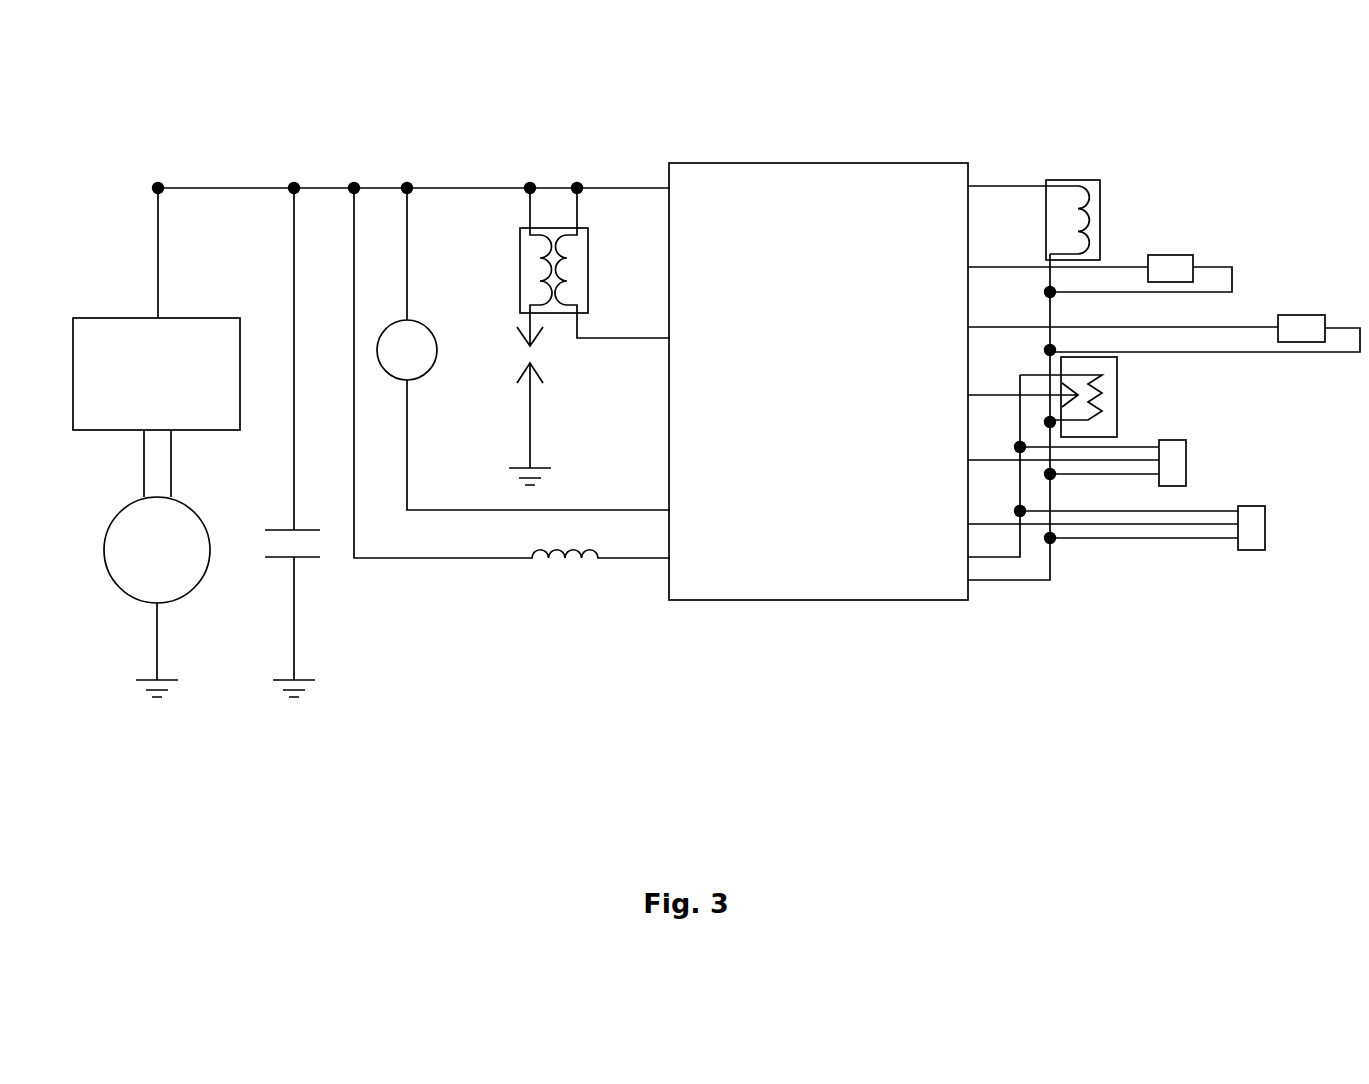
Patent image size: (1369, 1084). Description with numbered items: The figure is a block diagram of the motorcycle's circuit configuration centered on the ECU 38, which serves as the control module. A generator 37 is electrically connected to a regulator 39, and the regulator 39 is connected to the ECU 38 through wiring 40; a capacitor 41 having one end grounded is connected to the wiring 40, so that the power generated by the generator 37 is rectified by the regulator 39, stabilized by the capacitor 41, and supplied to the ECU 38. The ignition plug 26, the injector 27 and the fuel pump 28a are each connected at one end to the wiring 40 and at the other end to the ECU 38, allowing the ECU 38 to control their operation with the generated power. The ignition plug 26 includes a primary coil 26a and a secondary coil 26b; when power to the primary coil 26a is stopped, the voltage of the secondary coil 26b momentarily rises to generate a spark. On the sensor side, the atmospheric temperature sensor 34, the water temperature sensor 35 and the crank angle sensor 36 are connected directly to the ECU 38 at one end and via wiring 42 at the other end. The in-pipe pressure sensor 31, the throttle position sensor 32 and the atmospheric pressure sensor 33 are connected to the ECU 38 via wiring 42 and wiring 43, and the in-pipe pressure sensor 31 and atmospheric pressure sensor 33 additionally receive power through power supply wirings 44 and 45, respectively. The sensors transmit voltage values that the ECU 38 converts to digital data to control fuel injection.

The ignition plug 26 is at (566, 231).
The primary coil 26a is at (565, 268).
The secondary coil 26b is at (540, 268).
The injector 27 is at (556, 548).
The fuel pump 28a is at (420, 322).
The in-pipe pressure sensor 31 is at (1104, 446).
The throttle position sensor 32 is at (1117, 398).
The atmospheric pressure sensor 33 is at (1133, 510).
The atmospheric temperature sensor 34 is at (1168, 253).
The water temperature sensor 35 is at (1300, 313).
The crank angle sensor 36 is at (1060, 178).
The generator 37 is at (103, 570).
The ECU 38 is at (937, 162).
The regulator 39 is at (97, 432).
The wiring 40 is at (263, 187).
The capacitor 41 is at (311, 558).
The wiring 42 is at (1052, 567).
The wiring 43 is at (995, 557).
The power supply wiring 44 is at (997, 460).
The power supply wiring 45 is at (997, 524).